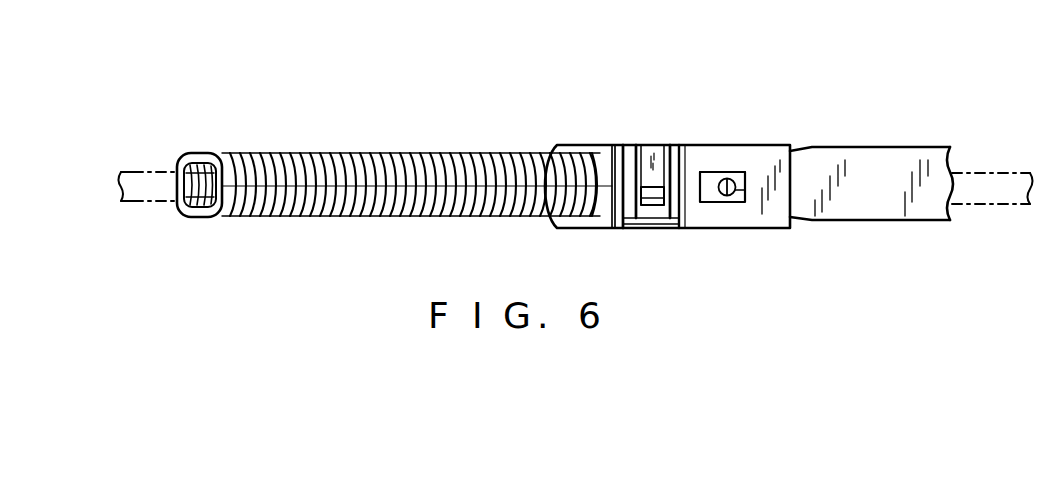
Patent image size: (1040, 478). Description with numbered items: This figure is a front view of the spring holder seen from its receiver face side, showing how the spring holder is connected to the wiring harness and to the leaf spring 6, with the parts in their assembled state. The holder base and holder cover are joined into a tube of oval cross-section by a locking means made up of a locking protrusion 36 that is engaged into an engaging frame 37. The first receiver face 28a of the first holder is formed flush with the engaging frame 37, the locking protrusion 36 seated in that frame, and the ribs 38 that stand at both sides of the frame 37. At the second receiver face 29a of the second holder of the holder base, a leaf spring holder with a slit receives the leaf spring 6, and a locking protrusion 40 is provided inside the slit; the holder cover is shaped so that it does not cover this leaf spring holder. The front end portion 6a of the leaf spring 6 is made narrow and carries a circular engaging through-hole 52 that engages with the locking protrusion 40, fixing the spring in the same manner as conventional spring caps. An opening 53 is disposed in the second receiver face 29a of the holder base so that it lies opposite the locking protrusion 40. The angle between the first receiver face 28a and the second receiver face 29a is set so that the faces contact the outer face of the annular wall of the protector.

The leaf spring 6 is at (912, 160).
The front end portion 6a is at (711, 172).
The first receiver face 28a is at (698, 63).
The second receiver face 29a is at (778, 157).
The locking protrusion 36 is at (651, 198).
The engaging frame 37 is at (633, 145).
The rib 38 is at (618, 145).
The locking protrusion 40 is at (733, 202).
The engaging through-hole 52 is at (717, 202).
The opening 53 is at (741, 172).